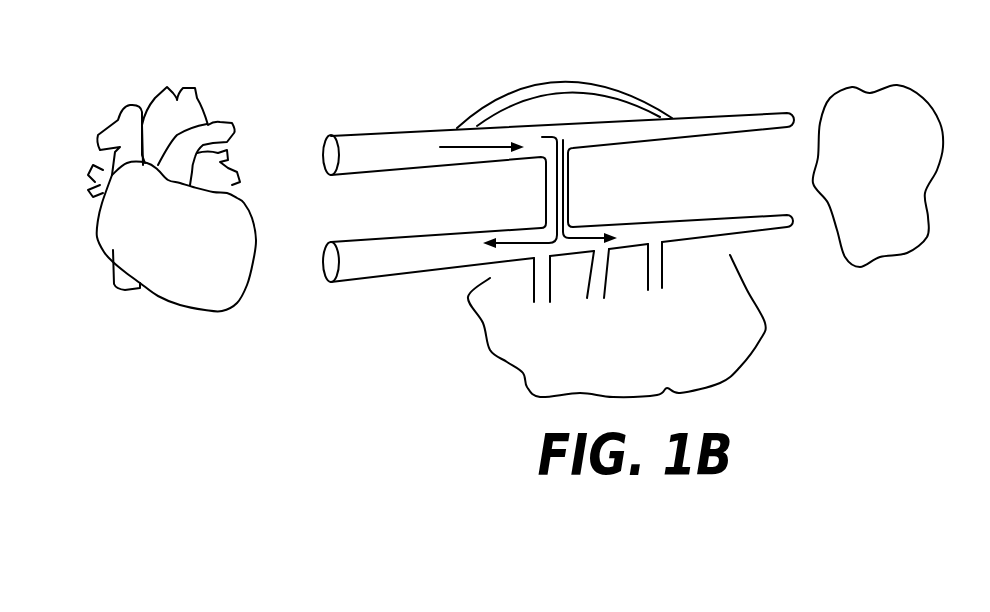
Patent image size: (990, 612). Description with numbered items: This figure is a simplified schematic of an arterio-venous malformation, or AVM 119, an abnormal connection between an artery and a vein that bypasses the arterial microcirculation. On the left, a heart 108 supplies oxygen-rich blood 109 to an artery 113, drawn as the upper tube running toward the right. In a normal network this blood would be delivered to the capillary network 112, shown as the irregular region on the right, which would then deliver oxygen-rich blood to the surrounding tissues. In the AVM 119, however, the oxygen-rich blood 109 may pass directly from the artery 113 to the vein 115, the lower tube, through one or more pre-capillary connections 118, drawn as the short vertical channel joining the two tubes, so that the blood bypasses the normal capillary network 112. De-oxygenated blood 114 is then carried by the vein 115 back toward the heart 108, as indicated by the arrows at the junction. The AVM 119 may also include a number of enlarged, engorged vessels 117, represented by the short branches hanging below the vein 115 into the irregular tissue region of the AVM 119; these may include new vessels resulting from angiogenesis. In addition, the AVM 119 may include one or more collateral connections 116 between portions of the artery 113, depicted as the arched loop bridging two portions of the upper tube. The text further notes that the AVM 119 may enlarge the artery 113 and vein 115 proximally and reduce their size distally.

The heart 108 is at (173, 273).
The oxygen-rich blood 109 is at (493, 143).
The capillary network 112 is at (908, 207).
The artery 113 is at (413, 142).
The de-oxygenated blood 114 is at (513, 238).
The vein 115 is at (392, 260).
The collateral connections 116 is at (597, 90).
The enlarged, engorged vessels 117 is at (540, 288).
The pre-capillary connections 118 is at (563, 187).
The AVM 119 is at (743, 340).